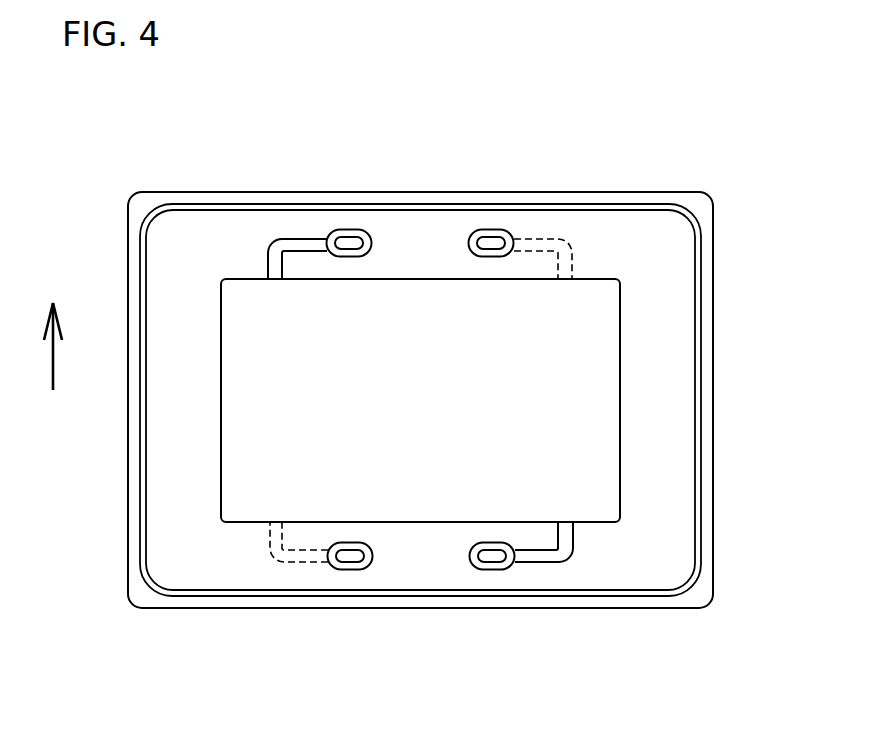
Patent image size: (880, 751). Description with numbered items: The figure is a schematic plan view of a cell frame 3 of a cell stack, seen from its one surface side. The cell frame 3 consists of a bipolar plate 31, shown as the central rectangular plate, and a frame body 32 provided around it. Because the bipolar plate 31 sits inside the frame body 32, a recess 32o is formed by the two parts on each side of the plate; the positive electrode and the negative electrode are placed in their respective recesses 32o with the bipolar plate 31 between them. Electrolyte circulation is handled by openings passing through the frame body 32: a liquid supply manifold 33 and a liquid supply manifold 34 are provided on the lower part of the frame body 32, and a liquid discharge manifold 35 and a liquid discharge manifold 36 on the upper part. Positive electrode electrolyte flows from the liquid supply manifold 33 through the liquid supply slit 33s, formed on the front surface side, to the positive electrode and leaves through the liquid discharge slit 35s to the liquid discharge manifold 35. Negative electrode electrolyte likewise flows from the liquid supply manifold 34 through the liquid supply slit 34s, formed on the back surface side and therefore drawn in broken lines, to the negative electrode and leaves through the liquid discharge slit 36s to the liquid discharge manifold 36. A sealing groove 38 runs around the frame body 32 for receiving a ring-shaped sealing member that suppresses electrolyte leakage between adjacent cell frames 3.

The cell frame 3 is at (681, 177).
The bipolar plate 31 is at (411, 305).
The frame body 32 is at (162, 192).
The recess 32o is at (609, 343).
The liquid supply manifold 33 is at (495, 559).
The liquid supply slit 33s is at (530, 560).
The liquid supply manifold 34 is at (350, 560).
The liquid supply slit 34s is at (292, 560).
The liquid discharge manifold 35 is at (348, 243).
The liquid discharge slit 35s is at (298, 240).
The liquid discharge manifold 36 is at (491, 242).
The liquid discharge slit 36s is at (536, 238).
The sealing groove 38 is at (145, 549).